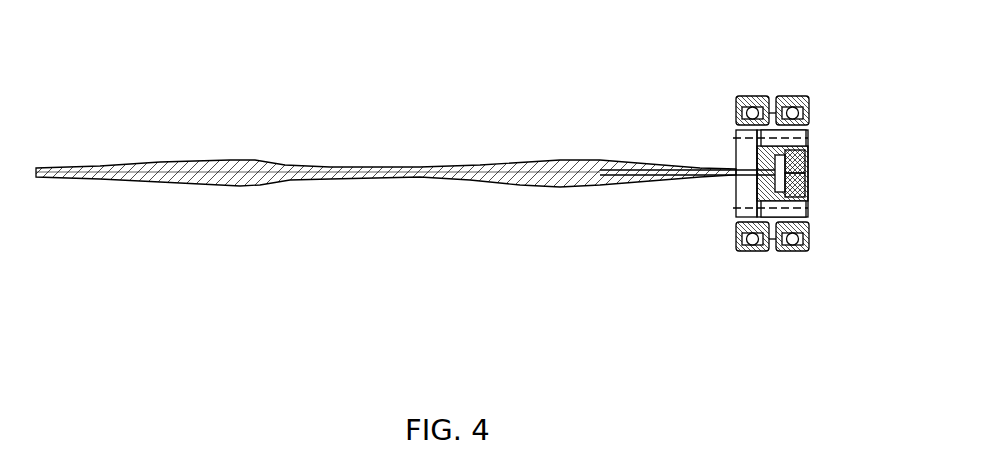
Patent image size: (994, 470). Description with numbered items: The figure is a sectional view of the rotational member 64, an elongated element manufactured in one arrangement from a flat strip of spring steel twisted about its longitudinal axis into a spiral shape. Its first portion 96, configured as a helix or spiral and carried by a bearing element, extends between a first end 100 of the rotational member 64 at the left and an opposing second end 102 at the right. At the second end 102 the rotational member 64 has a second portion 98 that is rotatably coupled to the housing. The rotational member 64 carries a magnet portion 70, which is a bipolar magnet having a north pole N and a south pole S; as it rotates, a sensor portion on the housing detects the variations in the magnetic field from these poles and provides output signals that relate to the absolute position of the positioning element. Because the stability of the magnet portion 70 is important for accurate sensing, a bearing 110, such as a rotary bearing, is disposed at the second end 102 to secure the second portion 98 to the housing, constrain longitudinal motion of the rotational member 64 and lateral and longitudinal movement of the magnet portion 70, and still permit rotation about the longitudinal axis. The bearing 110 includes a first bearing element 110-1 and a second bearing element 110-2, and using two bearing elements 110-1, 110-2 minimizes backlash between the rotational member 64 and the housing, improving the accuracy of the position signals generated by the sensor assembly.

The first end 100 is at (49, 138).
The rotational member 64 is at (535, 186).
The first portion 96 is at (128, 207).
The second portion 98 is at (730, 193).
The second end 102 is at (717, 133).
The magnet portion 70 is at (807, 150).
The north pole N is at (808, 160).
The south pole S is at (805, 183).
The bearing 110 is at (766, 88).
The first bearing element 110-1 is at (750, 248).
The second bearing element 110-2 is at (790, 248).